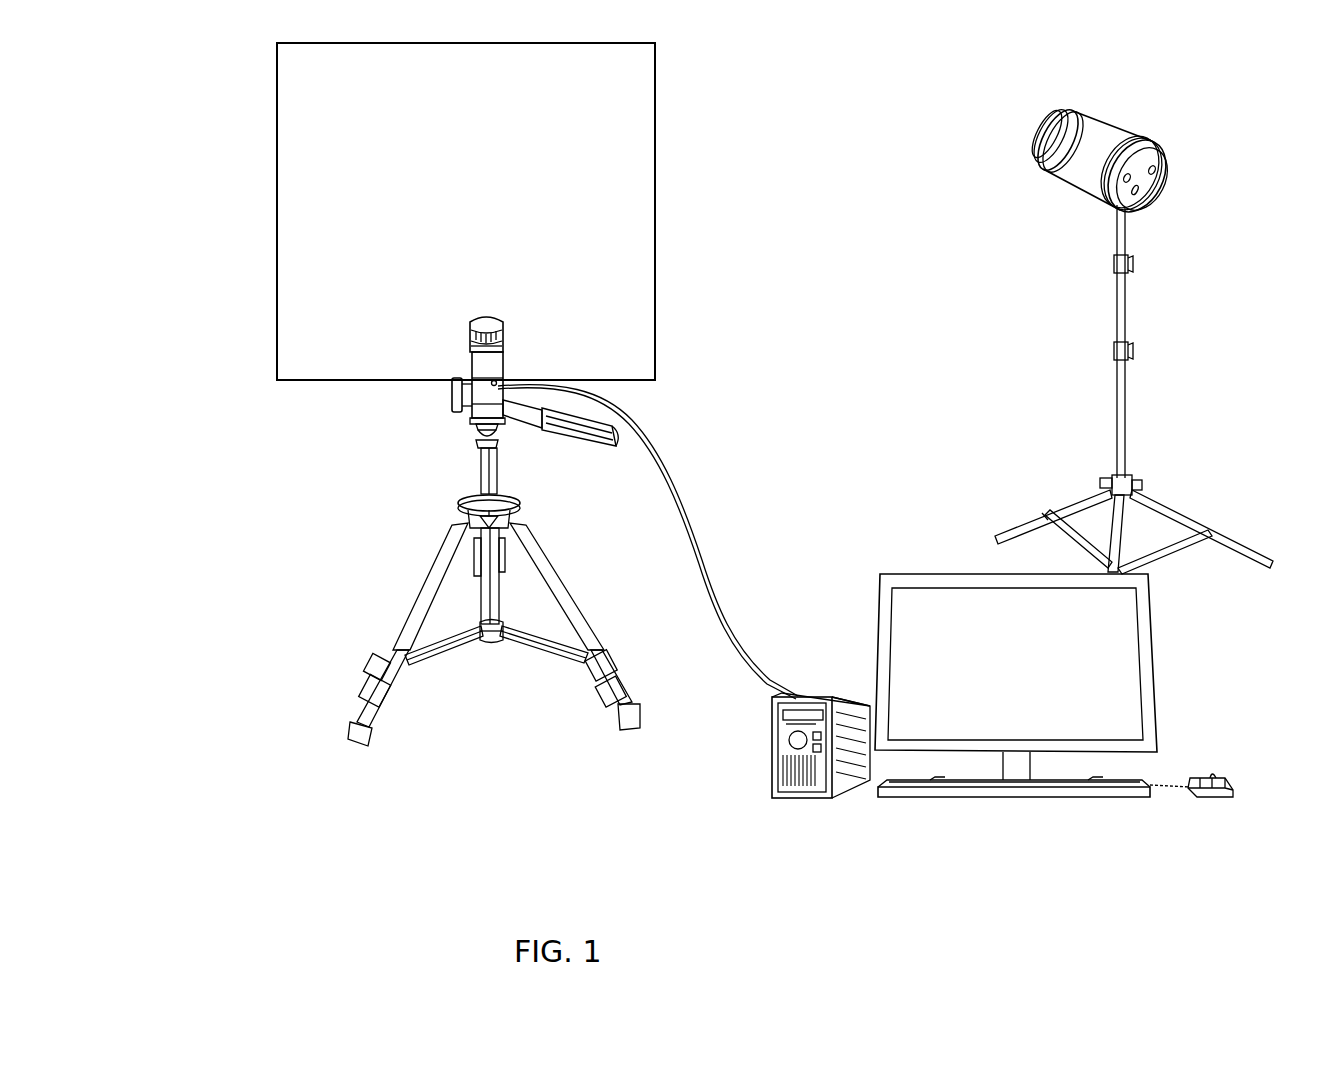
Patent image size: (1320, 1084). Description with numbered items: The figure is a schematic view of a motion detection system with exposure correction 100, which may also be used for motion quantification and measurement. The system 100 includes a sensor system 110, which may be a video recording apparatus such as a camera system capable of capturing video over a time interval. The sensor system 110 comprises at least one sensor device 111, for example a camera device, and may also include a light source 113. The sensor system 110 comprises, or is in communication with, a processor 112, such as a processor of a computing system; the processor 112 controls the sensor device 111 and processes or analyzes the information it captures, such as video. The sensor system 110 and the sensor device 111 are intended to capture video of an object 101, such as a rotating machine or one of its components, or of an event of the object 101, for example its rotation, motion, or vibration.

The motion detection system with exposure correction 100 is at (880, 400).
The object 101 is at (655, 104).
The sensor system 110 is at (295, 640).
The sensor device 111 is at (484, 367).
The processor 112 is at (770, 760).
The light source 113 is at (1083, 174).